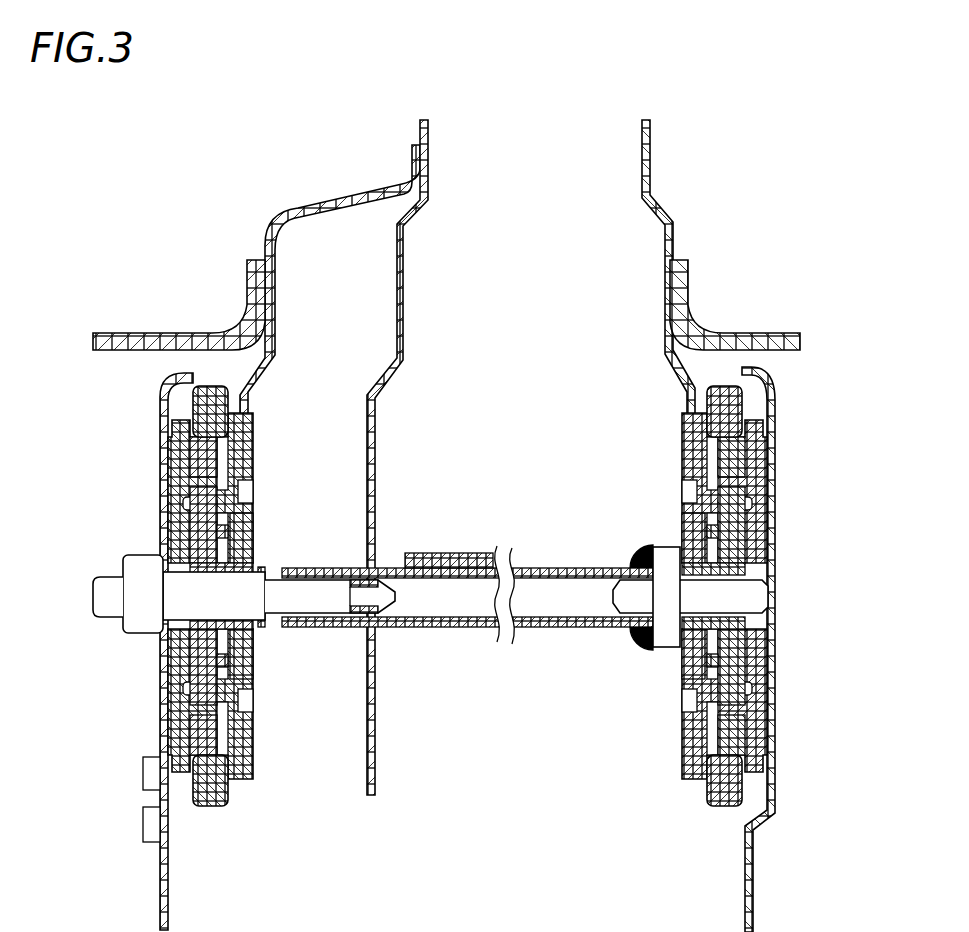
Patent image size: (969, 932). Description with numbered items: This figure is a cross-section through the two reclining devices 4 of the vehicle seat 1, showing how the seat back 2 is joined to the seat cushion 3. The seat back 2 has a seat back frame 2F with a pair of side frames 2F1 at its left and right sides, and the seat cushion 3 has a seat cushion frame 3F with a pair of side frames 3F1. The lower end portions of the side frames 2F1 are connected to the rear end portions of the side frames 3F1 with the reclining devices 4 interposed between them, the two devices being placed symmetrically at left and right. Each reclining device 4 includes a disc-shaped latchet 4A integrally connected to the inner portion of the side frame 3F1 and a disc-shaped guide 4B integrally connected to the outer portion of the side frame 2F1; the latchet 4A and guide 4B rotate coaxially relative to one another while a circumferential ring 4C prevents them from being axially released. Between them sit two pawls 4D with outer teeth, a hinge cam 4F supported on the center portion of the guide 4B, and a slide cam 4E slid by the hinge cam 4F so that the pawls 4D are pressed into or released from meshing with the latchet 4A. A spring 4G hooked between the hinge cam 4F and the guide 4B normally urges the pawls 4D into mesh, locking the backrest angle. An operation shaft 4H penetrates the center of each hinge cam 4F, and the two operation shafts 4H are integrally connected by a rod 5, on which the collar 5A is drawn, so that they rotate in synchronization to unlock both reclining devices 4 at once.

The vehicle seat 1 is at (258, 186).
The seat back 2 is at (682, 148).
The seat back frame 2F is at (466, 457).
The side frame 2F1 is at (367, 400).
The seat cushion 3 is at (98, 690).
The seat cushion frame 3F is at (477, 649).
The side frame 3F1 is at (162, 703).
The reclining device 4 is at (222, 390).
The latchet 4A is at (178, 470).
The guide 4B is at (253, 532).
The circumferential ring 4C is at (238, 396).
The pawl 4D is at (203, 452).
The slide cam 4E is at (200, 673).
The hinge cam 4F is at (237, 573).
The spring 4G is at (220, 648).
The operation shaft 4H is at (318, 592).
The rod 5 is at (580, 568).
The collar 5A is at (445, 560).